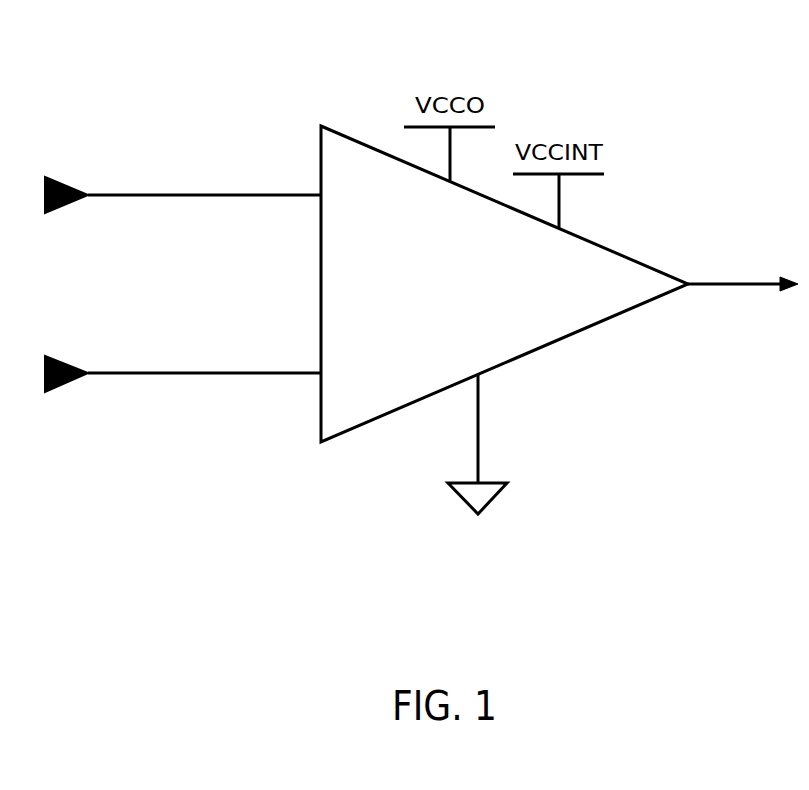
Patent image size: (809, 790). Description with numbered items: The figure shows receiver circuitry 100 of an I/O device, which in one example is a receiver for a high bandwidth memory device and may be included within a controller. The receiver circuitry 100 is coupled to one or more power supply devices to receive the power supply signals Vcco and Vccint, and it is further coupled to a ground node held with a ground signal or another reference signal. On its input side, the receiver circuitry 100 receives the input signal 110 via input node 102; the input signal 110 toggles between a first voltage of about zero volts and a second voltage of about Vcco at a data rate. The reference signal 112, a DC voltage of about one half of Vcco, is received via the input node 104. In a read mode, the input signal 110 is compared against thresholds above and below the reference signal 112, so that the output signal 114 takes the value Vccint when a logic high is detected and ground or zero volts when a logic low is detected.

The receiver circuitry 100 is at (664, 68).
The input node 102 is at (66, 203).
The input node 104 is at (66, 381).
The input signal 110 is at (173, 193).
The reference signal 112 is at (232, 372).
The output signal 114 is at (736, 282).